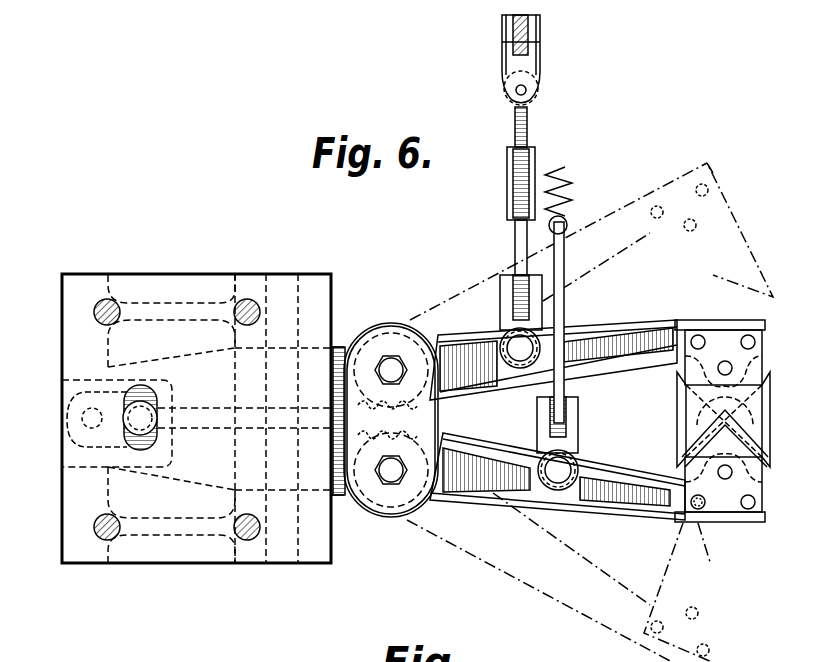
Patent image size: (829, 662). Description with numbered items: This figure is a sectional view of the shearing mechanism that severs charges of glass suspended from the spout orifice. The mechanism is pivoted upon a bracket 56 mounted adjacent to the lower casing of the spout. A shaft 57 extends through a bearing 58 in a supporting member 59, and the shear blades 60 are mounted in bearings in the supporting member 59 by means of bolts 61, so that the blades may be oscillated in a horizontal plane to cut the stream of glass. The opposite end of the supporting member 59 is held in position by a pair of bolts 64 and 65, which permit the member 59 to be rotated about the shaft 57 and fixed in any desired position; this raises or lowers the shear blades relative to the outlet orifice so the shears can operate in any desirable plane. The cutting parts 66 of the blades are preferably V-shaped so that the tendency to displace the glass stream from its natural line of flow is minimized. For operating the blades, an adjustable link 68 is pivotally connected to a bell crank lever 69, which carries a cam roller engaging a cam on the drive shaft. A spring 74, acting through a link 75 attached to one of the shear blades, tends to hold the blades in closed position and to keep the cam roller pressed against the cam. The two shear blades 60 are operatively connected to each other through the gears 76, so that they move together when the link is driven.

The bracket 56 is at (196, 563).
The shaft 57 is at (310, 563).
The bearing 58 is at (242, 380).
The supporting member 59 is at (342, 502).
The shear blades 60 is at (606, 214).
The bolts 61 is at (395, 362).
The bolt 64 is at (157, 430).
The bolt 65 is at (80, 430).
The cutting parts 66 is at (733, 222).
The adjustable link 68 is at (515, 130).
The bell crank lever 69 is at (535, 48).
The spring 74 is at (575, 175).
The link 75 is at (566, 310).
The gears 76 is at (338, 440).